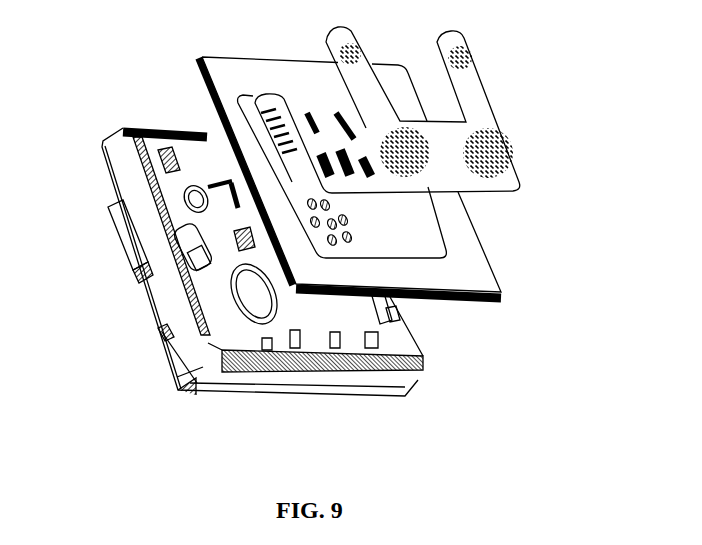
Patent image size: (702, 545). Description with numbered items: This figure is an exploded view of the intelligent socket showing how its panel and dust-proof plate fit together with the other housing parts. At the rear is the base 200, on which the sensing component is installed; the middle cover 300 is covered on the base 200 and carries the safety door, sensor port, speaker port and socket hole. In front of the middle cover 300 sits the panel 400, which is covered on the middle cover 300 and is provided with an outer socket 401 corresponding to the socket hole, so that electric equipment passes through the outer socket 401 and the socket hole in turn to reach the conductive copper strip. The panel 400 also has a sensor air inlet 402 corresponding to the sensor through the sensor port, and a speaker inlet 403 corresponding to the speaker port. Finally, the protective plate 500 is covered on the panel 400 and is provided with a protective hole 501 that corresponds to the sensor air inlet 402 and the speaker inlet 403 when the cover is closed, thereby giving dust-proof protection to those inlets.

The base 200 is at (122, 228).
The middle cover 300 is at (310, 347).
The panel 400 is at (473, 285).
The outer socket 401 is at (307, 112).
The sensor air inlet 402 is at (225, 103).
The speaker inlet 403 is at (352, 219).
The protective plate 500 is at (422, 110).
The protective hole 501 is at (525, 160).